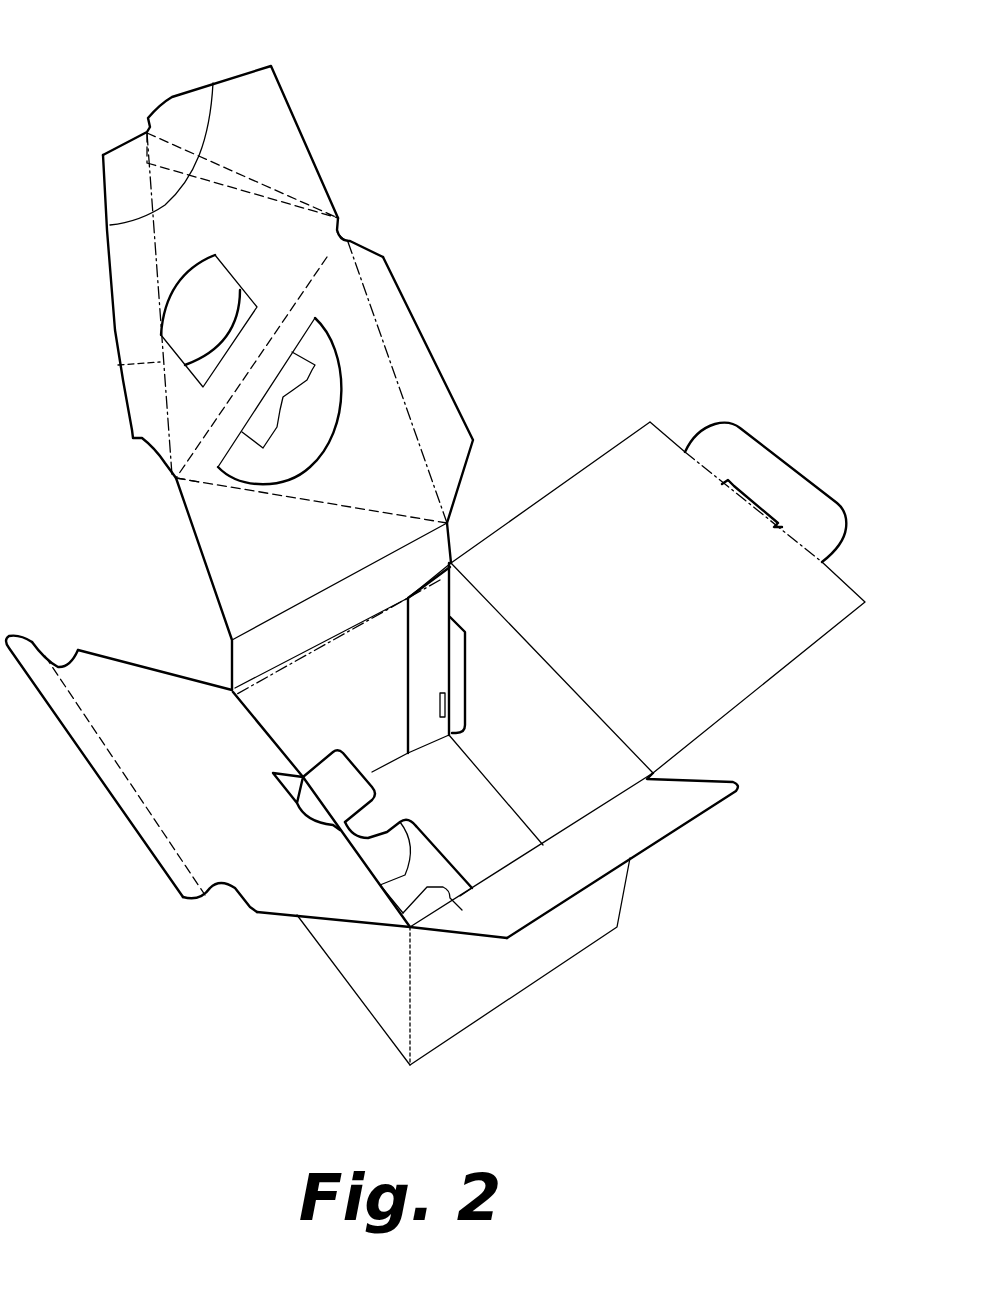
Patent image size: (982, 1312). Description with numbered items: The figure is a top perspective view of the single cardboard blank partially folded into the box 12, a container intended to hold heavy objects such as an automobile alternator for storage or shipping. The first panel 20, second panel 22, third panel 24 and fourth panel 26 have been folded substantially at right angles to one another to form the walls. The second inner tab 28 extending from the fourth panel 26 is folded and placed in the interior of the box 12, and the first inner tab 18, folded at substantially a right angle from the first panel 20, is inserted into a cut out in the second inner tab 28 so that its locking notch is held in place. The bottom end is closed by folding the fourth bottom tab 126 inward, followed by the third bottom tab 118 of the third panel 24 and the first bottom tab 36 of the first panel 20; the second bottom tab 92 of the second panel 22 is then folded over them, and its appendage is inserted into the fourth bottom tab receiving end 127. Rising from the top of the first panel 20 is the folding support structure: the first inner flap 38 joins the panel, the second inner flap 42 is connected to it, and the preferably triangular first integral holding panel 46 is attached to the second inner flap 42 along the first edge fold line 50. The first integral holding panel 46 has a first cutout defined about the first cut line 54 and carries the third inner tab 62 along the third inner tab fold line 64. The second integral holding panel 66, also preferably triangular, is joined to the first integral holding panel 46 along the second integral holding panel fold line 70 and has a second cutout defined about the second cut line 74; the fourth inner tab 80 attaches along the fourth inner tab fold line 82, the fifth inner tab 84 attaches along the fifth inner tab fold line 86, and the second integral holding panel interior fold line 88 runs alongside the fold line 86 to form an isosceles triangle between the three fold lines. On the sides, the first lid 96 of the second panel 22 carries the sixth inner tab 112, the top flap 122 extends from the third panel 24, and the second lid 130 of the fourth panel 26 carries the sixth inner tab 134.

The box 12 is at (128, 46).
The first inner tab 18 is at (460, 675).
The first panel 20 is at (322, 703).
The second panel 22 is at (357, 970).
The third panel 24 is at (467, 983).
The fourth panel 26 is at (520, 765).
The second inner tab 28 is at (420, 665).
The first bottom tab 36 is at (370, 866).
The first inner flap 38 is at (247, 646).
The second inner flap 42 is at (257, 561).
The first integral holding panel 46 is at (365, 471).
The first edge fold line 50 is at (227, 487).
The first cut line 54 is at (338, 405).
The third inner tab 62 is at (405, 347).
The third inner tab fold line 64 is at (415, 418).
The second integral holding panel 66 is at (259, 258).
The second integral holding panel fold line 70 is at (325, 255).
The second cut line 74 is at (233, 312).
The fourth inner tab 80 is at (140, 310).
The fourth inner tab fold line 82 is at (118, 365).
The fifth inner tab 84 is at (232, 137).
The fifth inner tab fold line 86 is at (213, 83).
The second integral holding panel interior fold line 88 is at (146, 218).
The second bottom tab 92 is at (415, 881).
The first lid 96 is at (192, 788).
The sixth inner tab 112 is at (22, 646).
The third bottom tab 118 is at (437, 905).
The top flap 122 is at (640, 836).
The fourth bottom tab 126 is at (442, 818).
The fourth bottom tab receiving end 127 is at (460, 866).
The second lid 130 is at (634, 598).
The sixth inner tab 134 is at (742, 453).